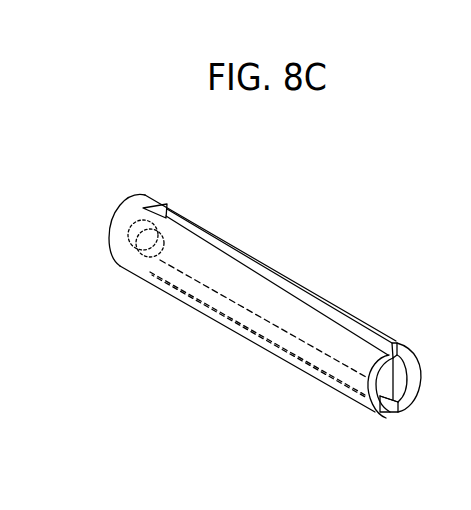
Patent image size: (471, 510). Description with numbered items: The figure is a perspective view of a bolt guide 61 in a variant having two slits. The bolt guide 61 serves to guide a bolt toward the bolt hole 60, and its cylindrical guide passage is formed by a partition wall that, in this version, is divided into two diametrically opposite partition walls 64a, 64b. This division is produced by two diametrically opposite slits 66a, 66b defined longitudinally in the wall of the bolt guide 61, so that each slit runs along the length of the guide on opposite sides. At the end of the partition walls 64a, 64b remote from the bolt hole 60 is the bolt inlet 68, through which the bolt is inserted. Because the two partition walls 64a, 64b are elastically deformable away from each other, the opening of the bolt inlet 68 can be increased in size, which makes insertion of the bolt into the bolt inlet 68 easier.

The bolt hole 60 is at (125, 218).
The bolt guide 61 is at (262, 252).
The partition wall 64a is at (352, 307).
The partition wall 64b is at (237, 331).
The slit 66a is at (395, 341).
The slit 66b is at (388, 413).
The bolt inlet 68 is at (397, 379).